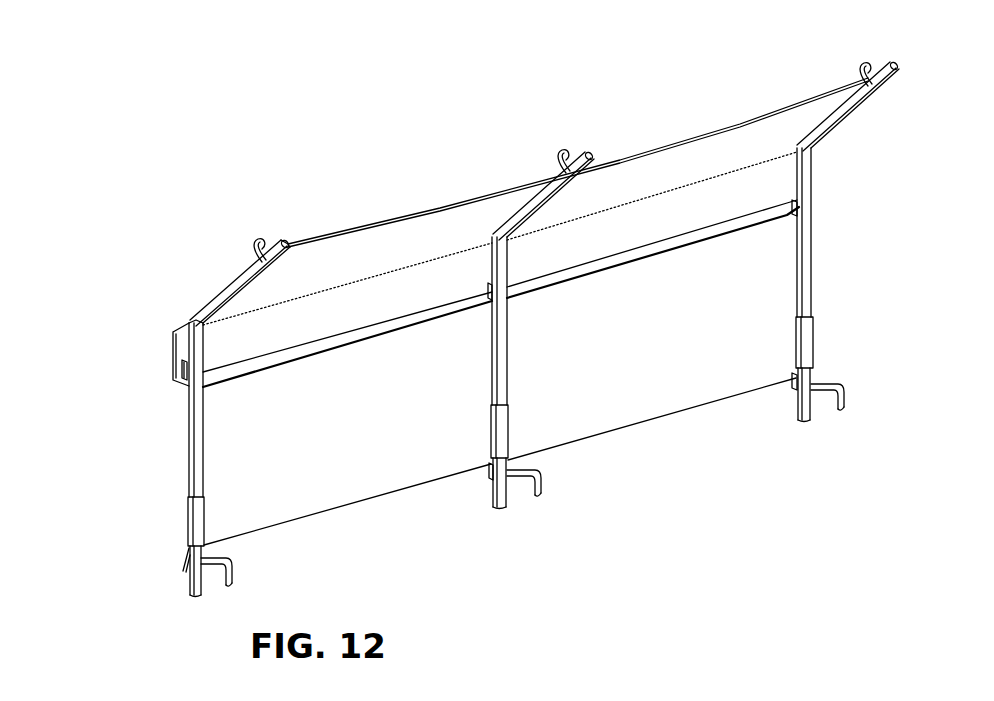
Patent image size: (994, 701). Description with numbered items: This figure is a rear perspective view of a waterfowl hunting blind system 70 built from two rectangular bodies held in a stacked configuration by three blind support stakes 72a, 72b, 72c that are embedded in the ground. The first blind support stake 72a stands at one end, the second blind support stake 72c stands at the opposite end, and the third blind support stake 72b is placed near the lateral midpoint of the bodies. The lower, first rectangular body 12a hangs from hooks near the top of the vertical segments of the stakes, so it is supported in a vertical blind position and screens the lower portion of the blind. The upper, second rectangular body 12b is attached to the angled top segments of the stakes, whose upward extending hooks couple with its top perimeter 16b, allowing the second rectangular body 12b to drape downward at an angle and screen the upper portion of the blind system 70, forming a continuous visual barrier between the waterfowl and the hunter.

The waterfowl hunting blind system 70 is at (320, 172).
The lower, first rectangular body 12a is at (218, 411).
The upper, second rectangular body 12b is at (214, 285).
The top perimeter of the second, upper rectangular body 16b is at (412, 222).
The first blind support stake 72a is at (213, 451).
The third blind support stake 72b is at (483, 354).
The second blind support stake 72c is at (783, 276).